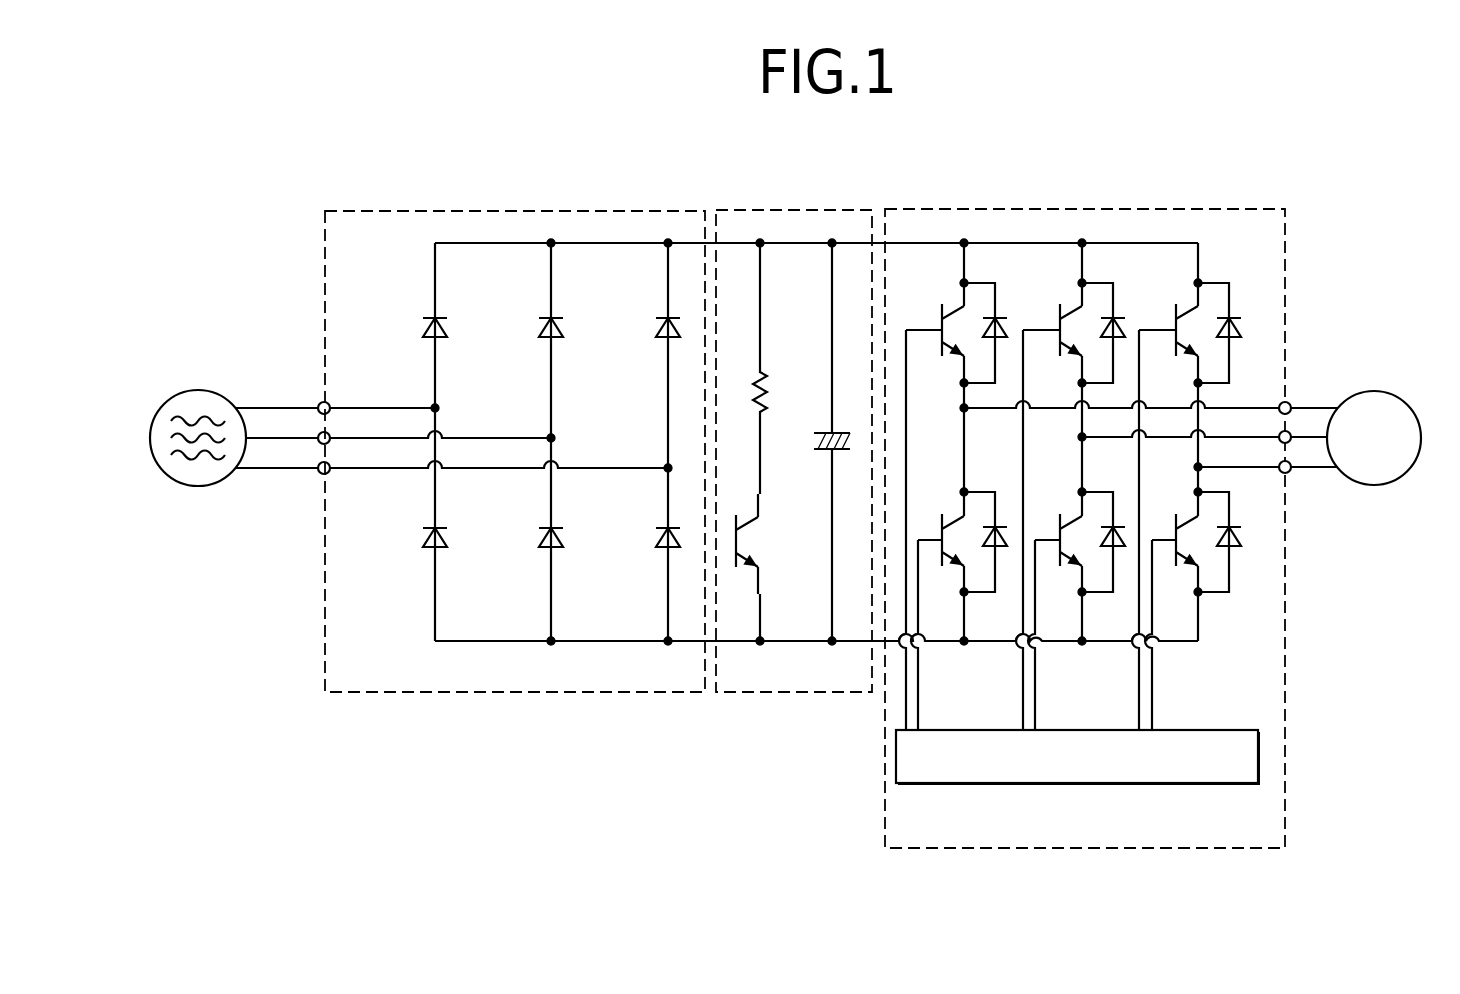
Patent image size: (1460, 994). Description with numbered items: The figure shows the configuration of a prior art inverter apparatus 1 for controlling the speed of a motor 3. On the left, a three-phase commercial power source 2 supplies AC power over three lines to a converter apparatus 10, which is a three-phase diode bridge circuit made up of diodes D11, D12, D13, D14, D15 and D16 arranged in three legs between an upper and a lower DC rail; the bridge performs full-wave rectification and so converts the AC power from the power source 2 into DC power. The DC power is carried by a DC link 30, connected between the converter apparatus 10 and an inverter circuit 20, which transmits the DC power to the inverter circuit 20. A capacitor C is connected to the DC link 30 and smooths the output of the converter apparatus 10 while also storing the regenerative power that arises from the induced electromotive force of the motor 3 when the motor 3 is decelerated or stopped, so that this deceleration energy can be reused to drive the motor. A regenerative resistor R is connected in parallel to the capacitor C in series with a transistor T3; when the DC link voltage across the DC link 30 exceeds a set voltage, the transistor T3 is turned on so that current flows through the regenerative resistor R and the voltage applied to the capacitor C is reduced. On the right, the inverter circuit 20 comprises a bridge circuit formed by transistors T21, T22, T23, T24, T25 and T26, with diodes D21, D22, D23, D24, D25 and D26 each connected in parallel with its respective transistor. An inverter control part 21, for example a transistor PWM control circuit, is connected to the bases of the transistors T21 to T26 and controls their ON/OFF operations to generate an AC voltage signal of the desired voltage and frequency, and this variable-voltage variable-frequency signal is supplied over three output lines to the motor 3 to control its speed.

The inverter apparatus 1 is at (196, 133).
The three-phase commercial power source 2 is at (200, 390).
The motor 3 is at (1394, 393).
The converter apparatus 10 is at (761, 424).
The inverter circuit 20 is at (1088, 502).
The inverter control part 21 is at (1137, 784).
The DC link 30 is at (794, 422).
The diode D11 is at (425, 328).
The diode D12 is at (424, 538).
The diode D13 is at (540, 328).
The diode D14 is at (540, 538).
The diode D15 is at (655, 328).
The diode D16 is at (635, 531).
The regenerative resistor R is at (773, 368).
The capacitor C is at (836, 442).
The transistor T3 is at (737, 518).
The transistor T21 is at (940, 314).
The transistor T22 is at (942, 567).
The transistor T23 is at (1059, 318).
The transistor T24 is at (1059, 567).
The transistor T25 is at (1175, 318).
The transistor T26 is at (1176, 567).
The diode D21 is at (995, 311).
The diode D22 is at (996, 518).
The diode D23 is at (1113, 311).
The diode D24 is at (1112, 518).
The diode D25 is at (1229, 311).
The diode D26 is at (1238, 530).